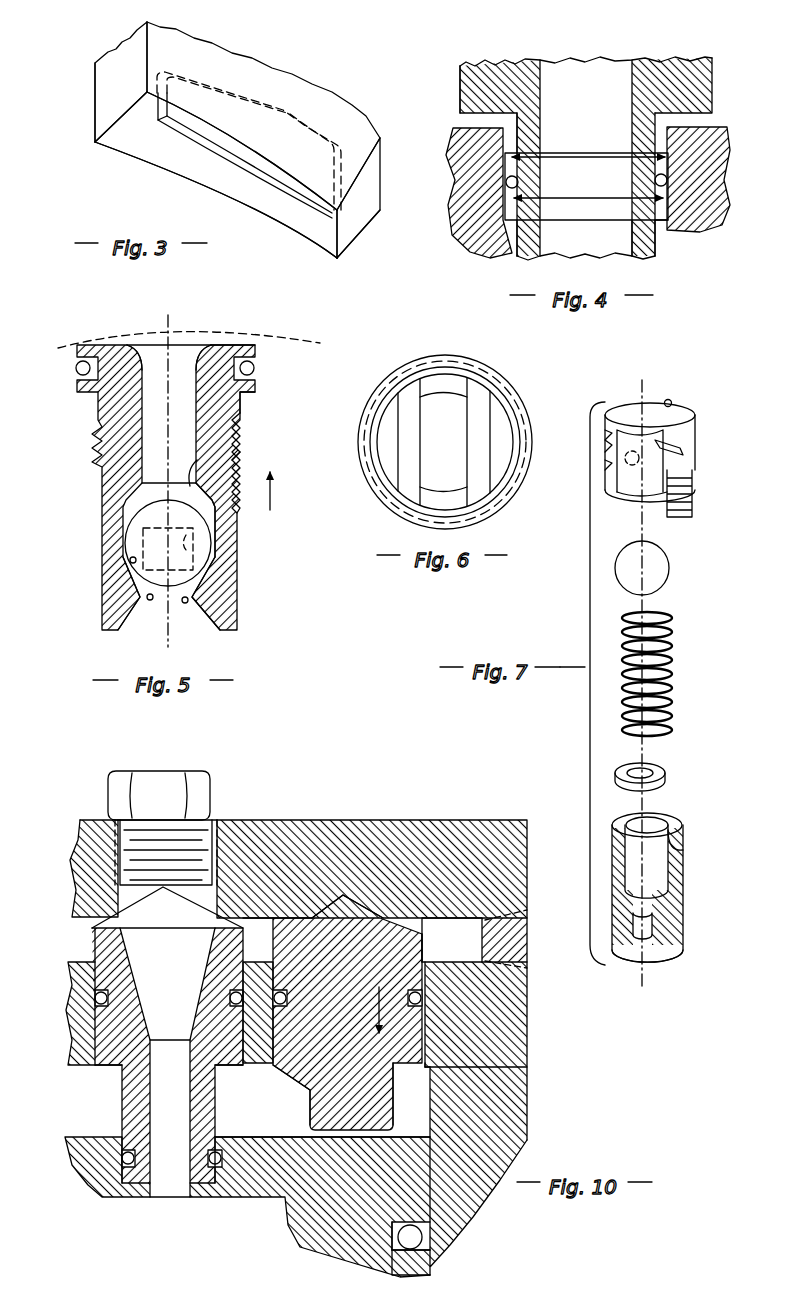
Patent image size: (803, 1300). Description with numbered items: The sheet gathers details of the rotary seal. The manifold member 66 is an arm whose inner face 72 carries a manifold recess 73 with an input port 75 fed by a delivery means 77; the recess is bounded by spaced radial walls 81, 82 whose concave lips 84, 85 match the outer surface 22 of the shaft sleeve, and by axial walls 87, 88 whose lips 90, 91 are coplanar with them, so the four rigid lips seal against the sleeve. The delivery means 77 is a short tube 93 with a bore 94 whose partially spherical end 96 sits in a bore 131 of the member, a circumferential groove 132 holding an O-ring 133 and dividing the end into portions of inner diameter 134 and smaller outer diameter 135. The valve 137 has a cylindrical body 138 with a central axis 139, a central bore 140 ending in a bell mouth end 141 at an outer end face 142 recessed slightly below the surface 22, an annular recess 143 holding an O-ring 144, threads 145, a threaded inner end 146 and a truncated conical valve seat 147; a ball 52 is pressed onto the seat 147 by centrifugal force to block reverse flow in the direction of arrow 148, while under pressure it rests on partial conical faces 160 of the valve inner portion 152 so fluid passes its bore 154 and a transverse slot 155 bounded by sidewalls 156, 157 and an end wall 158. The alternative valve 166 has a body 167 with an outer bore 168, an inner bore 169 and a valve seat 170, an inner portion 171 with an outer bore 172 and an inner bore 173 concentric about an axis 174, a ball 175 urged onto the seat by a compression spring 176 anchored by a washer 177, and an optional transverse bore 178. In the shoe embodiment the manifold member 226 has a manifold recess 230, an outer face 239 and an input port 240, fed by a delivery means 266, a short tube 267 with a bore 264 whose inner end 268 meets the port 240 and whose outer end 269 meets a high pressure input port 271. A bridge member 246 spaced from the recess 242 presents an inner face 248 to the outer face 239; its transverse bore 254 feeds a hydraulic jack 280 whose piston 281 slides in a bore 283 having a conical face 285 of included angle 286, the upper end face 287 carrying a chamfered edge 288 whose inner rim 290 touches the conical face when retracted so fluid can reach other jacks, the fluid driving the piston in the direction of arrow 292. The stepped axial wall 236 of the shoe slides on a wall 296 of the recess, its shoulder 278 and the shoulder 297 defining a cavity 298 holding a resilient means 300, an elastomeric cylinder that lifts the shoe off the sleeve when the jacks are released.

In FIG. 3, the manifold member 66 is at (255, 30).
In FIG. 4, the manifold member 66 is at (462, 230).
In FIG. 3, the axial wall 87 is at (130, 93).
In FIG. 3, the outer edge face or lip 90 is at (128, 127).
In FIG. 3, the radial wall 82 is at (158, 163).
In FIG. 4, the radial wall 82 is at (517, 245).
In FIG. 3, the concave outer edge face or lip 85 is at (222, 177).
In FIG. 3, the manifold recess 73 is at (192, 135).
In FIG. 3, the input port 75 is at (288, 88).
In FIG. 4, the input port 75 is at (610, 235).
In FIG. 3, the radial wall 81 is at (272, 152).
In FIG. 4, the radial wall 81 is at (665, 233).
In FIG. 3, the concave outer edge face or lip 84 is at (330, 182).
In FIG. 3, the inner face 72 is at (248, 207).
In FIG. 3, the outer edge face or lip 91 is at (343, 228).
In FIG. 3, the axial wall 88 is at (352, 247).
In FIG. 4, the delivery means 77 is at (520, 57).
In FIG. 4, the short tube 93 is at (500, 82).
In FIG. 4, the bore 94 is at (575, 68).
In FIG. 4, the bore 131 is at (512, 122).
In FIG. 4, the inner diameter 134 is at (590, 156).
In FIG. 4, the outer diameter 135 is at (605, 186).
In FIG. 4, the circumferential groove 132 is at (505, 182).
In FIG. 4, the O-ring 133 is at (668, 182).
In FIG. 4, the end 96 is at (655, 212).
In FIG. 5, the outer surface 22 is at (83, 332).
In FIG. 5, the central axis 139 is at (173, 330).
In FIG. 5, the central bore 140 is at (147, 357).
In FIG. 6, the central bore 140 is at (430, 408).
In FIG. 5, the bell mouth end 141 is at (203, 335).
In FIG. 5, the outer end face 142 is at (250, 343).
In FIG. 5, the annular recess 143 is at (73, 380).
In FIG. 5, the O-ring 144 is at (258, 368).
In FIG. 5, the cylindrical body 138 is at (245, 407).
In FIG. 5, the valve 137 is at (247, 423).
In FIG. 5, the truncated conical valve seat 147 is at (197, 488).
In FIG. 5, the threads 145 is at (240, 450).
In FIG. 5, the arrow 148 is at (270, 500).
In FIG. 5, the ball 52 is at (123, 527).
In FIG. 5, the threaded inner end 146 is at (220, 513).
In FIG. 5, the partial conical faces 160 is at (130, 558).
In FIG. 5, the valve inner portion 152 is at (237, 558).
In FIG. 5, the end wall 158 is at (237, 573).
In FIG. 5, the sidewall 157 is at (147, 597).
In FIG. 6, the sidewall 157 is at (428, 463).
In FIG. 5, the sidewall 156 is at (188, 600).
In FIG. 6, the sidewall 156 is at (460, 415).
In FIG. 5, the bore 154 is at (157, 607).
In FIG. 5, the transverse slot 155 is at (182, 608).
In FIG. 6, the transverse slot 155 is at (445, 497).
In FIG. 7, the axis 174 is at (643, 380).
In FIG. 7, the outer bore 168 is at (657, 417).
In FIG. 7, the valve seat 170 is at (677, 448).
In FIG. 7, the transverse bore 178 is at (694, 476).
In FIG. 7, the cylindrical body 167 is at (605, 496).
In FIG. 7, the inner bore 169 is at (657, 500).
In FIG. 7, the ball 175 is at (657, 565).
In FIG. 7, the alternative valve 166 is at (655, 600).
In FIG. 7, the compression spring 176 is at (674, 690).
In FIG. 7, the washer 177 is at (667, 771).
In FIG. 7, the inner bore 173 is at (675, 828).
In FIG. 7, the inner portion 171 is at (690, 880).
In FIG. 7, the outer bore 172 is at (648, 938).
In FIG. 10, the bridge member 246 is at (298, 980).
In FIG. 10, the high pressure input port 271 is at (185, 838).
In FIG. 10, the outer end 269 is at (220, 928).
In FIG. 10, the input port 240 is at (168, 1193).
In FIG. 10, the delivery means 266 is at (108, 962).
In FIG. 10, the short tube 267 is at (137, 1057).
In FIG. 10, the bore 264 is at (158, 1010).
In FIG. 10, the chamfered edge 288 is at (347, 1024).
In FIG. 10, the piston 281 is at (423, 1013).
In FIG. 10, the inner face 248 is at (433, 960).
In FIG. 10, the transverse bore 254 is at (431, 963).
In FIG. 10, the conical face 285 is at (317, 903).
In FIG. 10, the inner rim 290 is at (300, 918).
In FIG. 10, the included angle 286 is at (353, 903).
In FIG. 10, the upper end face 287 is at (327, 920).
In FIG. 10, the arrow 292 is at (355, 1008).
In FIG. 10, the bore 283 is at (417, 1040).
In FIG. 10, the recess 242 is at (262, 1083).
In FIG. 10, the outer face 239 is at (288, 1130).
In FIG. 10, the hydraulic jack 280 is at (410, 1080).
In FIG. 10, the wall 296 is at (428, 1115).
In FIG. 10, the manifold recess 230 is at (107, 1182).
In FIG. 10, the manifold member 226 is at (273, 1187).
In FIG. 10, the inner end 268 is at (217, 1173).
In FIG. 10, the axial wall 236 is at (432, 1193).
In FIG. 10, the shoulder 278 is at (407, 1225).
In FIG. 10, the cavity 298 is at (390, 1228).
In FIG. 10, the shoulder 297 is at (398, 1240).
In FIG. 10, the resilient means 300 is at (443, 1240).